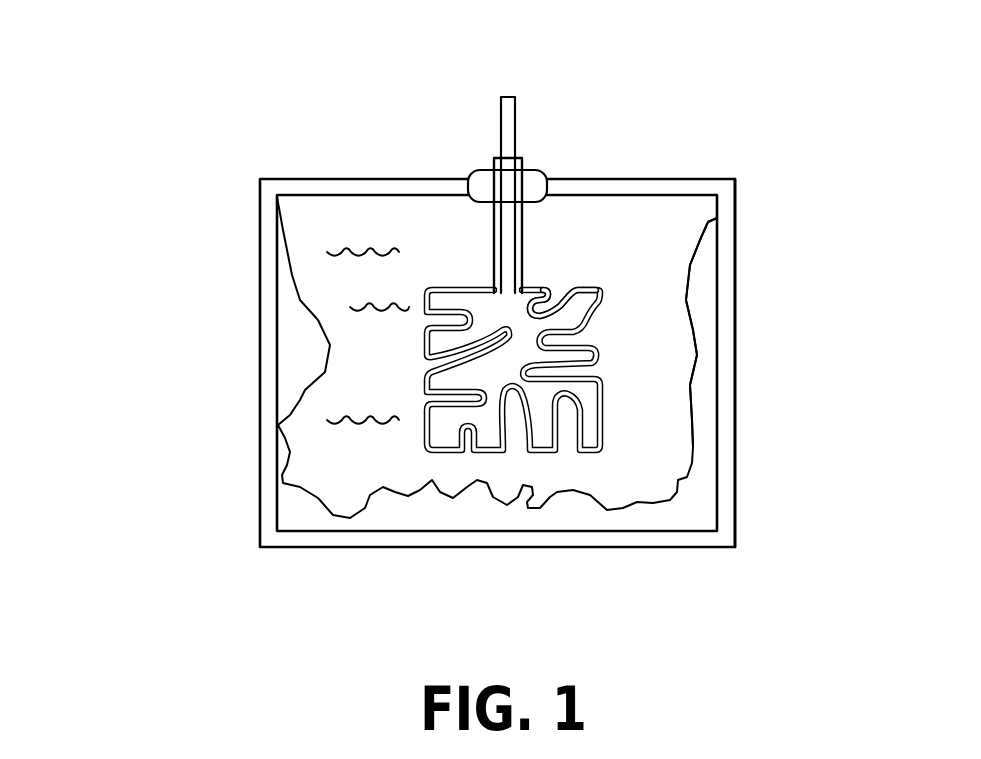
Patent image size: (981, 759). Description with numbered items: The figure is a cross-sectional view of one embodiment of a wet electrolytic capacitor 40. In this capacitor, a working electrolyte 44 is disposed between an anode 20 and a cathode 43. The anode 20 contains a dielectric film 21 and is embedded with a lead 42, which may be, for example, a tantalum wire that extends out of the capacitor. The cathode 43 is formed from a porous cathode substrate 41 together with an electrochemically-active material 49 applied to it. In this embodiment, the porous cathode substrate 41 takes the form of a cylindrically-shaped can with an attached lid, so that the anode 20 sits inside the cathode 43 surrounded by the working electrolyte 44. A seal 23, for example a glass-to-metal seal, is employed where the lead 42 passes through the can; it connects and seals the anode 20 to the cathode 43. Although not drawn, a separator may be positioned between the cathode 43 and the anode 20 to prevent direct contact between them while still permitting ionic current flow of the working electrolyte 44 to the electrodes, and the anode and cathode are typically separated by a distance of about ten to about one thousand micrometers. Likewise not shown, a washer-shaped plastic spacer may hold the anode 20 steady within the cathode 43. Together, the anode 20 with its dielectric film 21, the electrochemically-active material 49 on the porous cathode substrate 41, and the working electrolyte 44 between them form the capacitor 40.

The anode 20 is at (460, 308).
The dielectric film 21 is at (577, 290).
The seal 23 is at (537, 187).
The wet electrolytic capacitor 40 is at (175, 283).
The porous cathode substrate 41 is at (735, 537).
The lead 42 is at (508, 107).
The cathode 43 is at (737, 307).
The working electrolyte 44 is at (330, 421).
The electrochemically-active material 49 is at (698, 272).